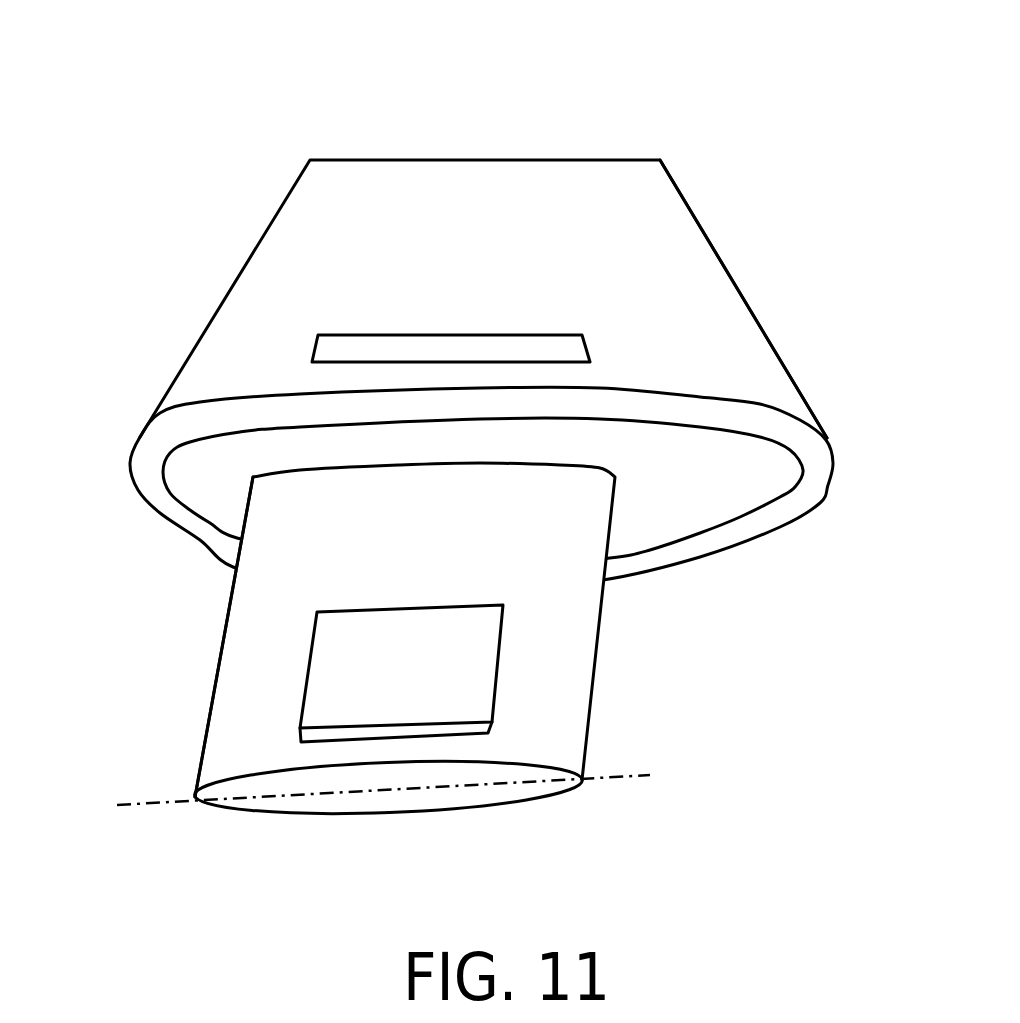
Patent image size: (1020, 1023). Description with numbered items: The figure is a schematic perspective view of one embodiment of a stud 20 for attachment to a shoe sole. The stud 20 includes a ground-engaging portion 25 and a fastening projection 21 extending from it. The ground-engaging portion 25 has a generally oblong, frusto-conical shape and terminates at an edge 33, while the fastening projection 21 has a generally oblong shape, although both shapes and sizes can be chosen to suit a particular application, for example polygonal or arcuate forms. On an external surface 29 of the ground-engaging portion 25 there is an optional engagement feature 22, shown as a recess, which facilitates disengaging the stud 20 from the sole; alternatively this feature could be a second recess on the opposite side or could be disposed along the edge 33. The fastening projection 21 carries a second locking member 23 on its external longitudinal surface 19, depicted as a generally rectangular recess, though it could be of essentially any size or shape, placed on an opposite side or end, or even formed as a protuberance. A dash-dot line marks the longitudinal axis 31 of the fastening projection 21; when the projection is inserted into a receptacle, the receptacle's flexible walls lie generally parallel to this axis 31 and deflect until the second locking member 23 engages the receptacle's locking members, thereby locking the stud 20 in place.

The stud 20 is at (183, 73).
The external surface 29 is at (693, 267).
The ground-engaging portion 25 is at (785, 372).
The edge 33 is at (138, 493).
The engagement feature 22 is at (312, 348).
The external longitudinal surface 19 is at (238, 707).
The fastening projection 21 is at (227, 622).
The second locking member 23 is at (500, 662).
The longitudinal axis 31 is at (162, 803).